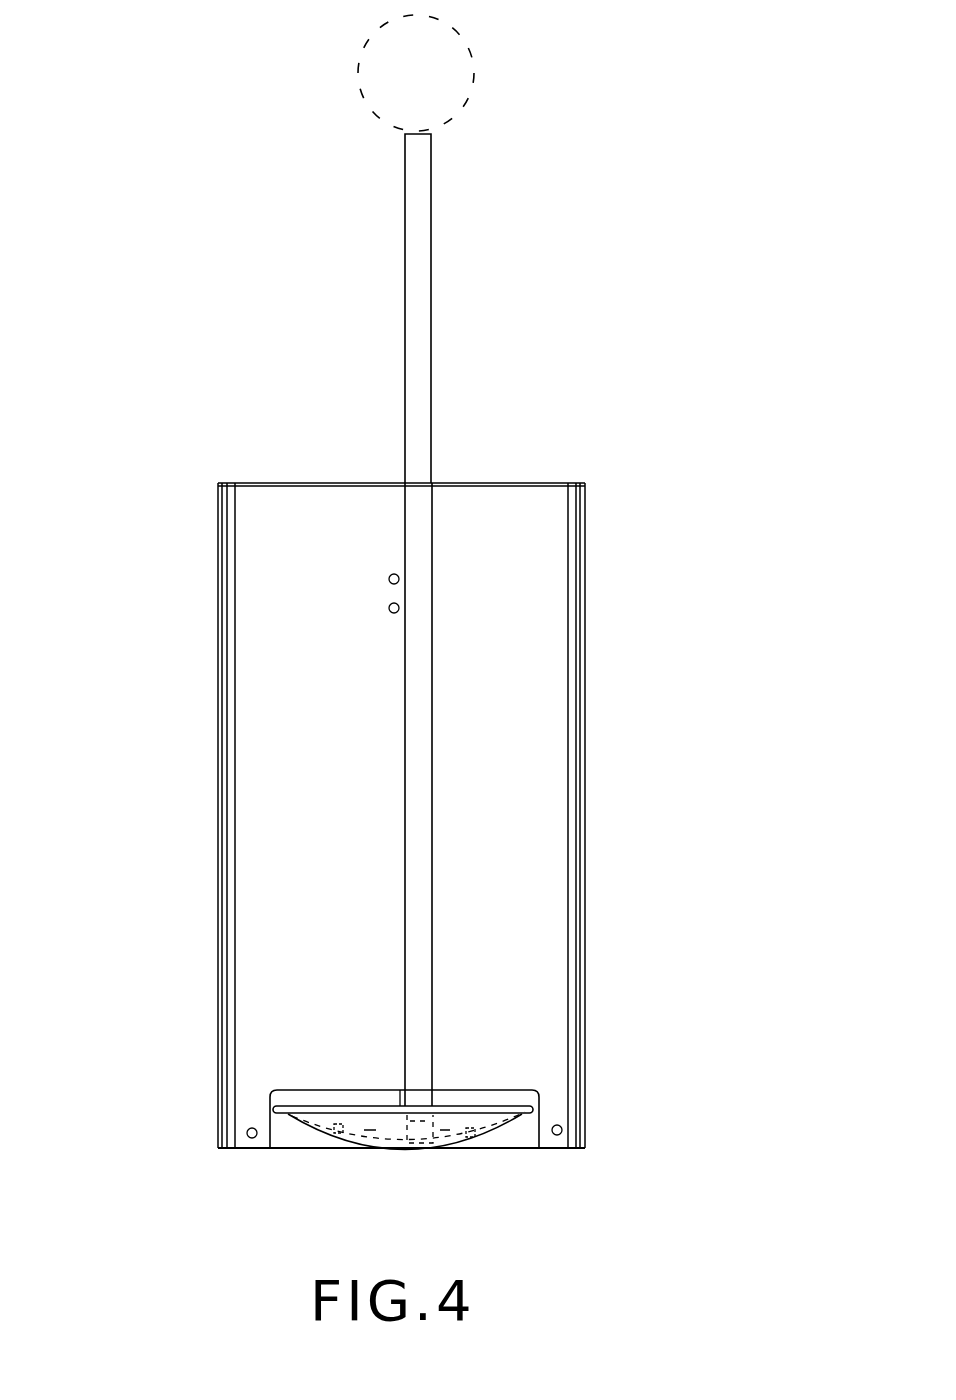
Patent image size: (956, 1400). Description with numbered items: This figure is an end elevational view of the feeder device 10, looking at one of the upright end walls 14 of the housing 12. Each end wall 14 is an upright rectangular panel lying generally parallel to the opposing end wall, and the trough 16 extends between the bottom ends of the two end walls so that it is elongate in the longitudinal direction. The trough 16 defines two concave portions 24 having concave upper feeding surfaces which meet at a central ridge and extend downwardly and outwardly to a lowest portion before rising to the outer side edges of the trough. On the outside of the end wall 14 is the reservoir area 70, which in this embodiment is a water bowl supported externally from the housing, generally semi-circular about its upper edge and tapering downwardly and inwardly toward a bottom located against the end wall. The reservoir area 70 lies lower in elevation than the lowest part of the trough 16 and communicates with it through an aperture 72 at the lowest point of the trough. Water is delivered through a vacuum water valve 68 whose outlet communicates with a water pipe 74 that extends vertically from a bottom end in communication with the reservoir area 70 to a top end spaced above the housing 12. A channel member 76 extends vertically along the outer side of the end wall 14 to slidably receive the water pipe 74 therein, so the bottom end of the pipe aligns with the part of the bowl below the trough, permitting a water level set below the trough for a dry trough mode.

The device 10 is at (128, 343).
The housing 12 is at (538, 458).
The end wall 14 is at (553, 608).
The trough 16 is at (317, 1160).
The concave portion 24 is at (444, 1134).
The vacuum water valve 68 is at (473, 50).
The reservoir area 70 is at (356, 1072).
The aperture 72 is at (471, 1140).
The water pipe 74 is at (425, 348).
The channel member 76 is at (433, 766).